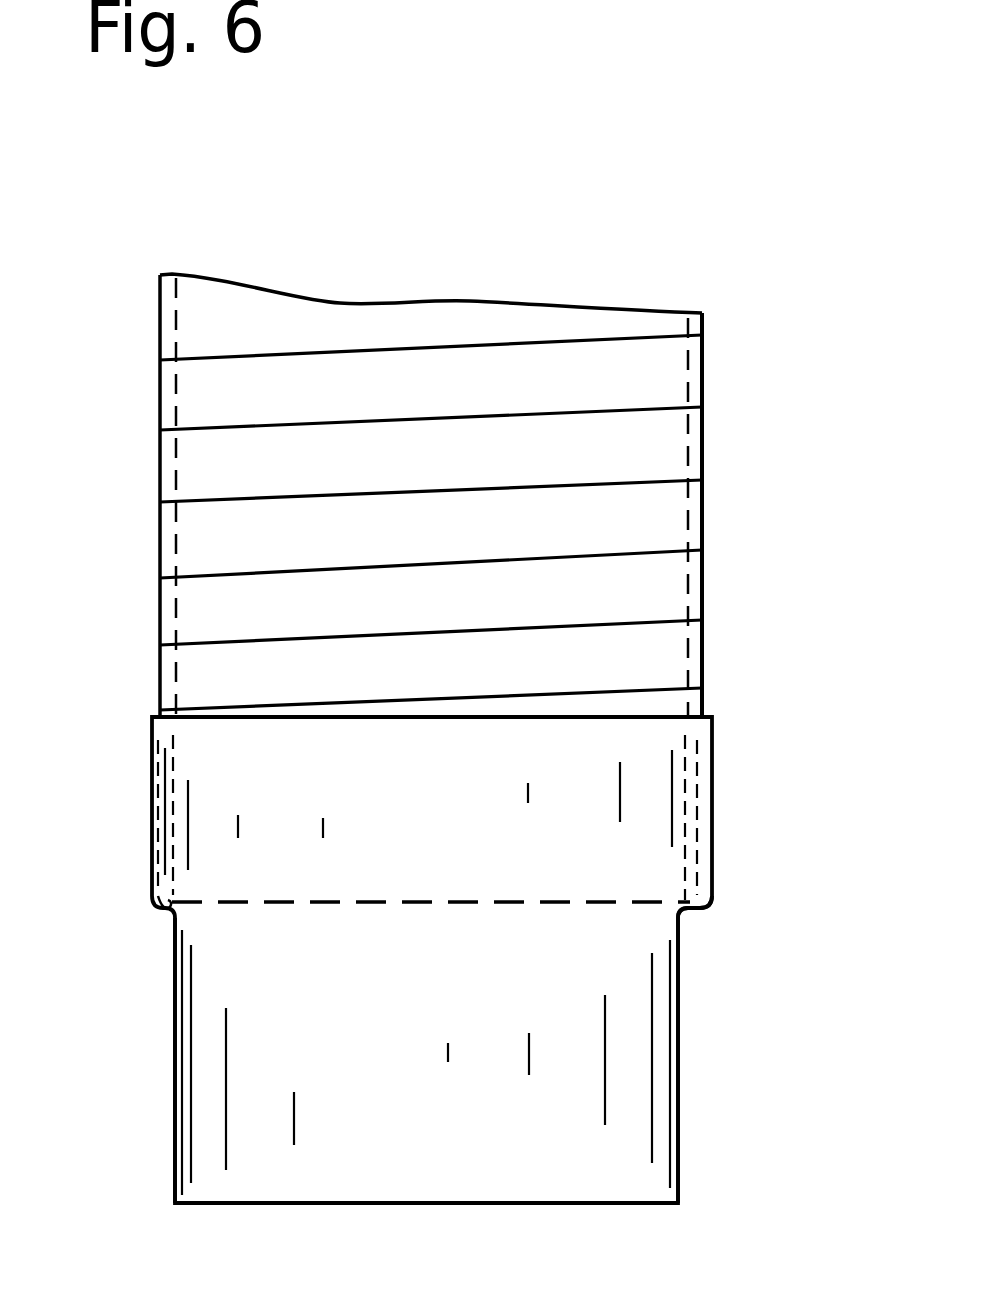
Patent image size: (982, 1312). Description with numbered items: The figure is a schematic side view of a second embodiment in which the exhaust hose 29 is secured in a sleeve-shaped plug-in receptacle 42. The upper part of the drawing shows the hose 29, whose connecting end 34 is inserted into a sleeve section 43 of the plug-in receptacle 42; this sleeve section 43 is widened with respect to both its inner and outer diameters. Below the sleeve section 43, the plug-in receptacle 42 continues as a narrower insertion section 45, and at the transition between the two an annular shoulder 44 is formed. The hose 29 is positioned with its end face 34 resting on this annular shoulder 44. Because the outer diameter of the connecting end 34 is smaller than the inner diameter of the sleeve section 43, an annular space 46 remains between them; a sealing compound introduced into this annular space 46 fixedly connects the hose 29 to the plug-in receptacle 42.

The hose 29 is at (613, 462).
The sleeve section 43 is at (152, 790).
The annular space 46 is at (705, 775).
The connecting end 34 is at (622, 860).
The annular shoulder 44 is at (697, 910).
The plug-in receptacle 42 is at (623, 1083).
The insertion section 45 is at (202, 1135).